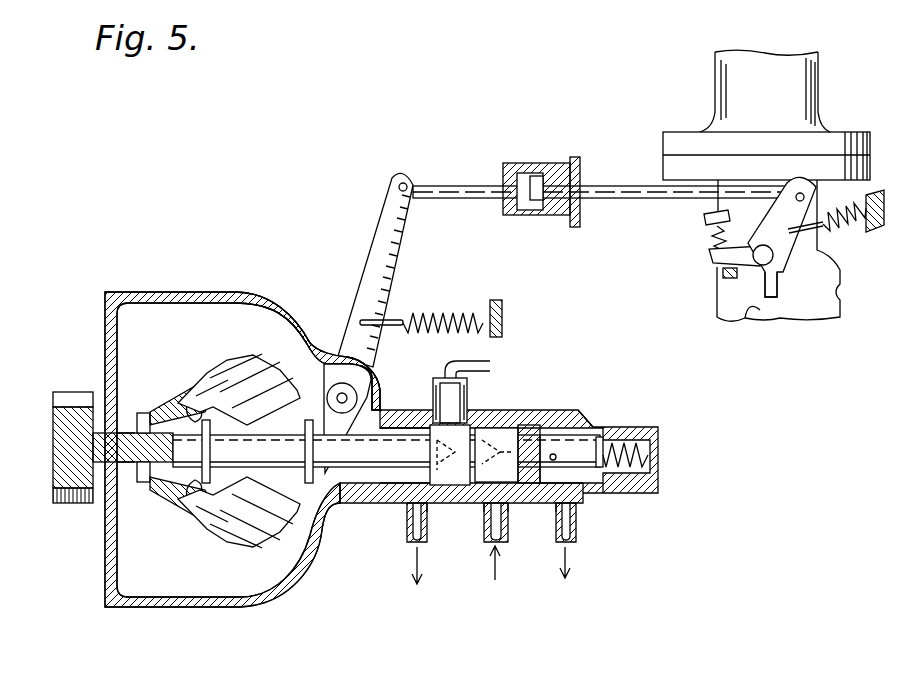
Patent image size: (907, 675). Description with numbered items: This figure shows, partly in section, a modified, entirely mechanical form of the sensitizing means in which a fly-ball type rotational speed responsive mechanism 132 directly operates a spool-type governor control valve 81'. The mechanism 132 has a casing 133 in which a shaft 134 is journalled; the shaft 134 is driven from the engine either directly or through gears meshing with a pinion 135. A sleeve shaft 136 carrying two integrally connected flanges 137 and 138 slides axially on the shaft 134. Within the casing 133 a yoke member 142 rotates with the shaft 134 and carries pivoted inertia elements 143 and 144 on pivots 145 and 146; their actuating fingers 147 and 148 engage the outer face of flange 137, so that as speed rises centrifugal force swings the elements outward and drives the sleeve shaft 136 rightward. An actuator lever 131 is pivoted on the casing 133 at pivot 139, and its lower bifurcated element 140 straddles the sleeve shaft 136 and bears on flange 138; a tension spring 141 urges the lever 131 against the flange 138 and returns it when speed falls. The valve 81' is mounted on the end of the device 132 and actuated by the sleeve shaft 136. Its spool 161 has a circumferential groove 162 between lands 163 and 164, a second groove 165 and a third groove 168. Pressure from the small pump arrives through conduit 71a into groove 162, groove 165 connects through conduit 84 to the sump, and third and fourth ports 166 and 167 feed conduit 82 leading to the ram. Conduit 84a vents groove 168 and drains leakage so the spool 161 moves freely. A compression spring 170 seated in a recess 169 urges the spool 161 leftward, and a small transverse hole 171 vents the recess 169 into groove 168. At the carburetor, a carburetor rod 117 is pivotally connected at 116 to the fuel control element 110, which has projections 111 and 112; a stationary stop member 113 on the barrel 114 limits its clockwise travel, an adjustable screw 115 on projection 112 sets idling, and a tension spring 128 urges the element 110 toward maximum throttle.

The actuator lever 131 is at (370, 286).
The rotational speed responsive mechanism 132 is at (200, 290).
The casing 133 is at (292, 301).
The shaft 134 is at (120, 433).
The pinion 135 is at (53, 432).
The sleeve shaft 136 is at (335, 498).
The flange 137 is at (212, 443).
The flange 138 is at (306, 468).
The pivot 139 is at (375, 378).
The bifurcated element 140 is at (318, 410).
The tension spring 141 is at (417, 313).
The yoke member 142 is at (167, 492).
The inertia element 143 is at (243, 370).
The inertia element 144 is at (240, 530).
The pivot 145 is at (198, 383).
The pivot 146 is at (203, 522).
The actuating finger 147 is at (183, 423).
The actuating finger 148 is at (178, 507).
The spool 161 is at (508, 423).
The circumferential groove 162 is at (478, 417).
The land 163 is at (445, 478).
The land 164 is at (532, 478).
The second circumferential groove 165 is at (417, 487).
The third port 166 is at (433, 416).
The fourth port 167 is at (458, 397).
The third circumferential groove 168 is at (575, 482).
The recess 169 is at (598, 480).
The compression spring 170 is at (620, 428).
The transverse hole 171 is at (553, 454).
The governor control valve 81' is at (587, 395).
The conduit 82 is at (475, 362).
The conduit 84 is at (423, 543).
The conduit 84a is at (577, 530).
The conduit 71a is at (498, 560).
The fuel control element 110 is at (788, 236).
The projection 111 is at (778, 286).
The projection 112 is at (713, 263).
The stationary stop member 113 is at (752, 322).
The barrel 114 is at (730, 300).
The adjustable screw 115 is at (705, 226).
The pivotal connection 116 is at (806, 197).
The carburetor rod 117 is at (637, 199).
The tension spring 128 is at (840, 225).